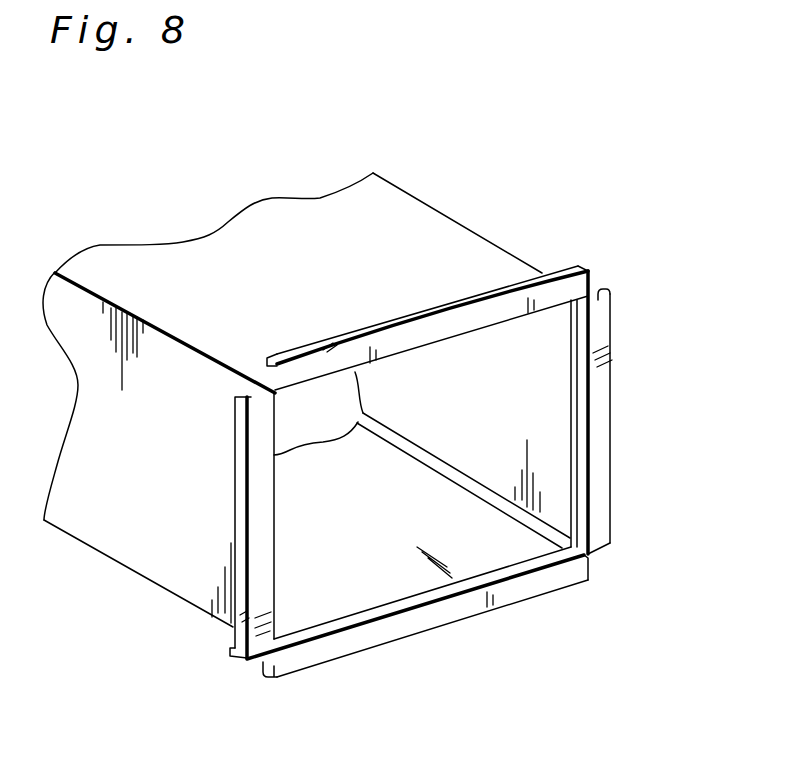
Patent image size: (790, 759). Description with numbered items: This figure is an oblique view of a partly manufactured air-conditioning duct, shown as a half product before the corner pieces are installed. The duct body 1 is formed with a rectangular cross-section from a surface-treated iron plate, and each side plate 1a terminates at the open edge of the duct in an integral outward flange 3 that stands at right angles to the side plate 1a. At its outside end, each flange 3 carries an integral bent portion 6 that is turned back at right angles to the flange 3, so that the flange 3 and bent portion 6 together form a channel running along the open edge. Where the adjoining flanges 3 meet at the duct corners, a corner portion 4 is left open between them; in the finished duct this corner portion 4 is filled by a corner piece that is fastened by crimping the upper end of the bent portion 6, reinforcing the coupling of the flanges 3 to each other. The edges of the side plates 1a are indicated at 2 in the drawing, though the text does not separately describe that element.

The duct body 1 is at (440, 197).
The side plate 1a is at (463, 243).
The plate edge 2 is at (152, 322).
The flange 3 is at (432, 338).
The corner portion 4 is at (597, 282).
The bent portion 6 is at (360, 328).